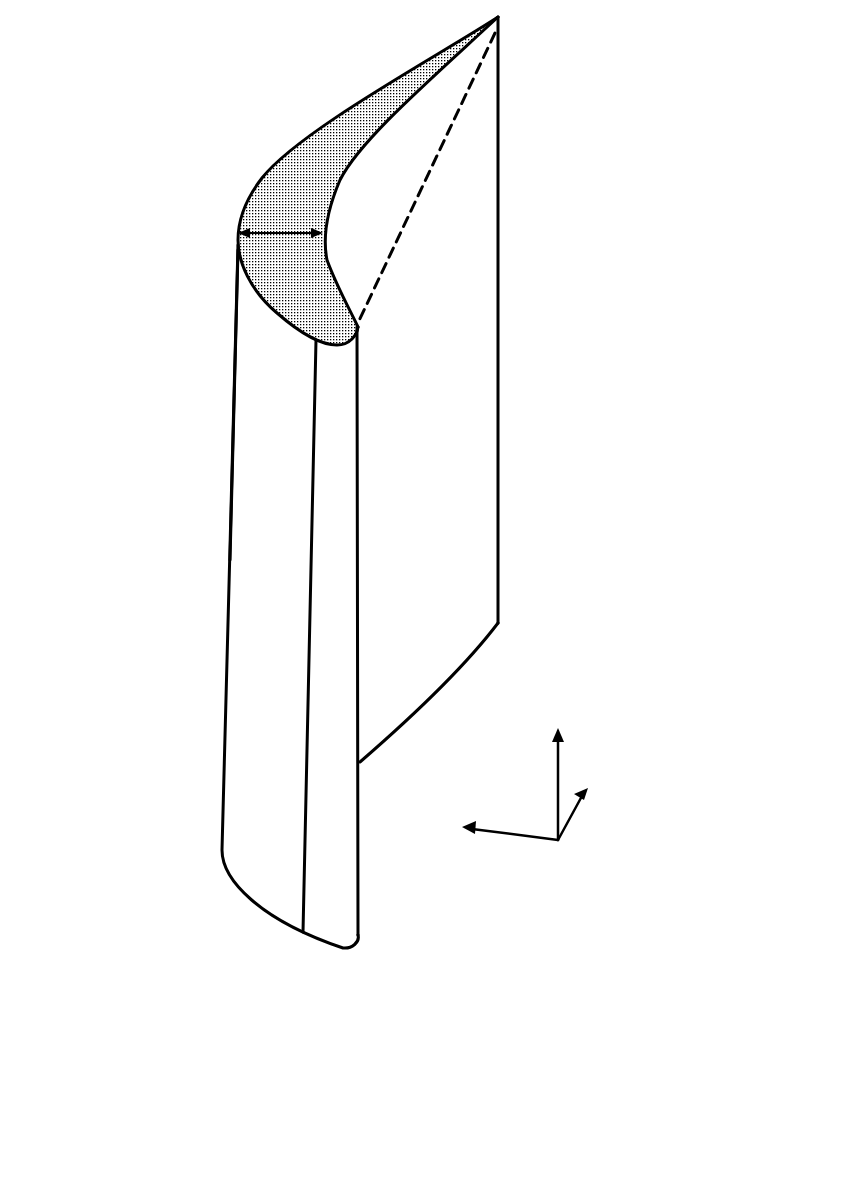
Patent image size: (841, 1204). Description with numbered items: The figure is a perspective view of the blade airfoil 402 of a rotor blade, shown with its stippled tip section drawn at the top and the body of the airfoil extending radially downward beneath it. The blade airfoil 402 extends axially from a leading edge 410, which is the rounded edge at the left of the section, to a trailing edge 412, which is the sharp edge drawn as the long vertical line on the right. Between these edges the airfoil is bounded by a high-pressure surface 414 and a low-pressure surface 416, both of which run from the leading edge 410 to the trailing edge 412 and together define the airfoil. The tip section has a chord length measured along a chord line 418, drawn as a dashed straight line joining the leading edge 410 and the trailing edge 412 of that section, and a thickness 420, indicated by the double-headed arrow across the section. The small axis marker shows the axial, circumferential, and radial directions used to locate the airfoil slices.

The blade airfoil 402 is at (73, 48).
The leading edge 410 is at (347, 390).
The trailing edge 412 is at (498, 95).
The high-pressure surface 414 is at (445, 295).
The low-pressure surface 416 is at (255, 342).
The chord line 418 is at (438, 157).
The thickness 420 is at (277, 230).